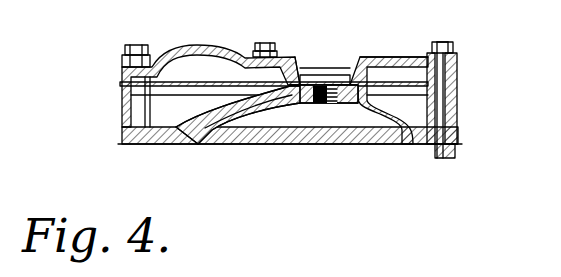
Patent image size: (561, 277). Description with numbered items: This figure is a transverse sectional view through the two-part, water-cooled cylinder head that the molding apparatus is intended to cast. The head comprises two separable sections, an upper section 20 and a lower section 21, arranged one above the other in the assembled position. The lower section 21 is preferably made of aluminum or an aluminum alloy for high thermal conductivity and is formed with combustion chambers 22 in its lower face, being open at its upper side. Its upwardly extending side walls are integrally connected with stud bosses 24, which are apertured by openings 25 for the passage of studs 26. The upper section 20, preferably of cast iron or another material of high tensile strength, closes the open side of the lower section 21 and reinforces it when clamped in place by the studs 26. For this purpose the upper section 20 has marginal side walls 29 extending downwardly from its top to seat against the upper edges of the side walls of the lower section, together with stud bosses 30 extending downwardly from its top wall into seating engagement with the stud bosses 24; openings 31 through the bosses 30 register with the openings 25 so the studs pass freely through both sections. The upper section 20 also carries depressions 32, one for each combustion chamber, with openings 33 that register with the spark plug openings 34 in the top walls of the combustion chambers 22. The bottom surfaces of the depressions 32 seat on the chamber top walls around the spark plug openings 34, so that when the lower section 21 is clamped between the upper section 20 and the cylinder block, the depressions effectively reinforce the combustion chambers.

The upper section 20 is at (385, 58).
The lower section 21 is at (166, 143).
The combustion chambers 22 is at (247, 138).
The stud bosses 24 is at (426, 108).
The openings 25 is at (448, 120).
The studs 26 is at (455, 43).
The marginal side walls 29 is at (122, 70).
The stud bosses 30 is at (420, 55).
The openings 31 is at (460, 60).
The depressions 32 is at (300, 63).
The openings 33 is at (347, 65).
The spark plug openings 34 is at (325, 103).